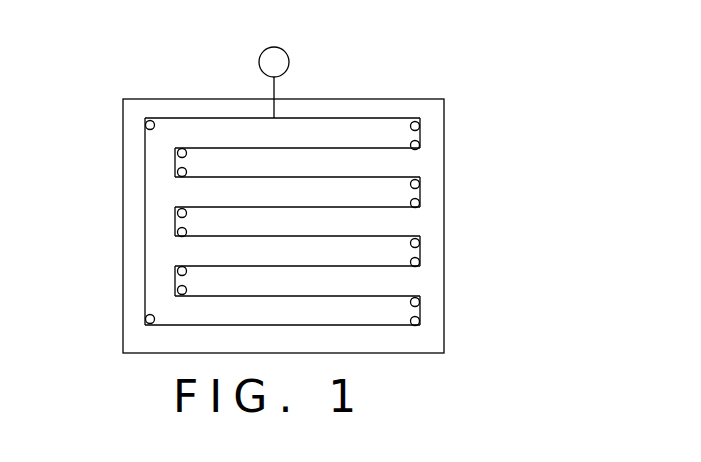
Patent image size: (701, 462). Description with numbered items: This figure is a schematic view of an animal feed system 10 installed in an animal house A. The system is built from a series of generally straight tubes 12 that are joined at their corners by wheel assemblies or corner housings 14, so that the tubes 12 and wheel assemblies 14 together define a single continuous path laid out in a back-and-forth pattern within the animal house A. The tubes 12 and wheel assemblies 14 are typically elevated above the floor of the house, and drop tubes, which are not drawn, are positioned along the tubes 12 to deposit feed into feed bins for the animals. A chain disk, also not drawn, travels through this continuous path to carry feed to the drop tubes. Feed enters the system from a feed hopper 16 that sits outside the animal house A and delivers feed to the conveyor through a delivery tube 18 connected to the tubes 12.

The animal house A is at (187, 99).
The animal feed system 10 is at (367, 118).
The tubes 12 is at (420, 134).
The wheel assemblies 14 is at (420, 204).
The feed hopper 16 is at (289, 62).
The delivery tube 18 is at (275, 90).